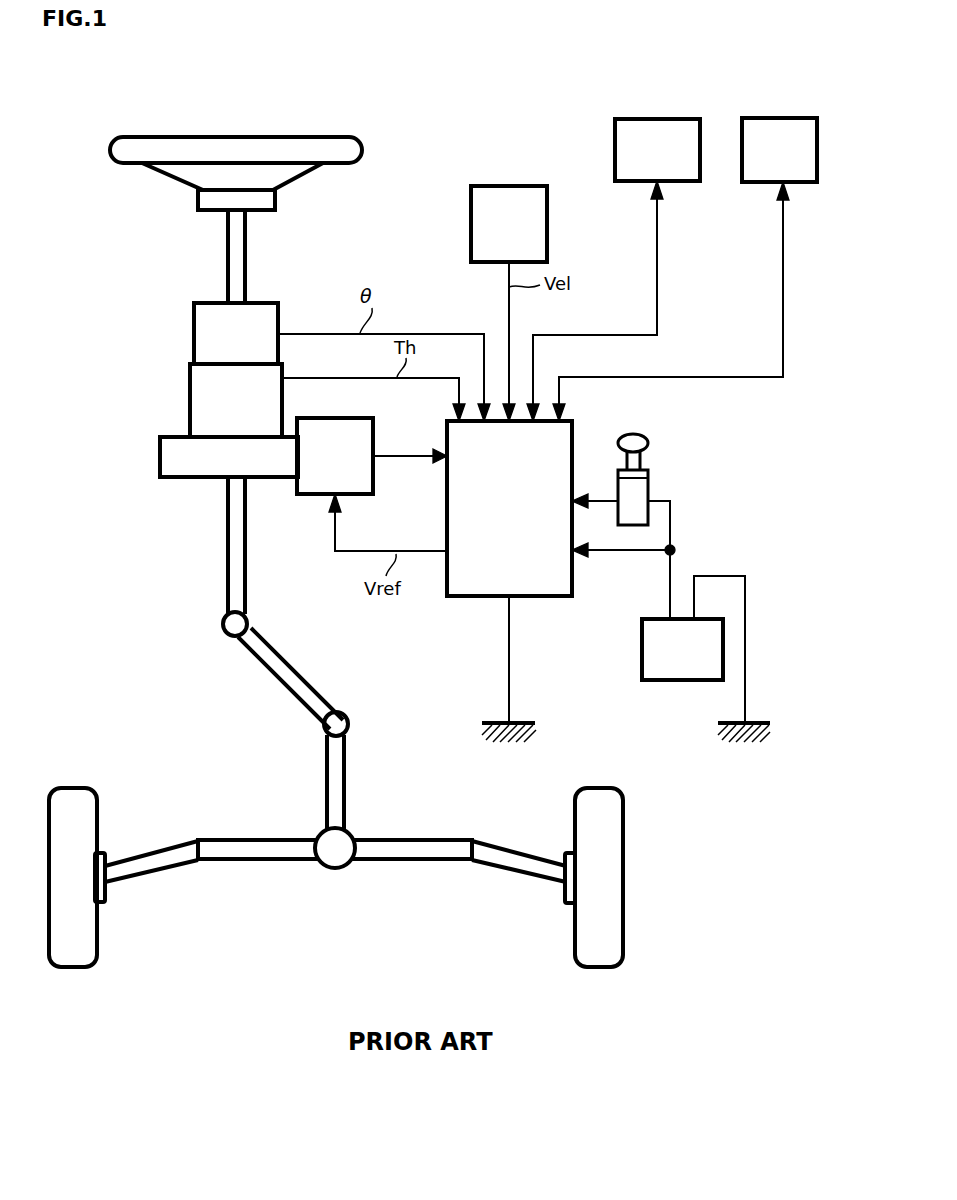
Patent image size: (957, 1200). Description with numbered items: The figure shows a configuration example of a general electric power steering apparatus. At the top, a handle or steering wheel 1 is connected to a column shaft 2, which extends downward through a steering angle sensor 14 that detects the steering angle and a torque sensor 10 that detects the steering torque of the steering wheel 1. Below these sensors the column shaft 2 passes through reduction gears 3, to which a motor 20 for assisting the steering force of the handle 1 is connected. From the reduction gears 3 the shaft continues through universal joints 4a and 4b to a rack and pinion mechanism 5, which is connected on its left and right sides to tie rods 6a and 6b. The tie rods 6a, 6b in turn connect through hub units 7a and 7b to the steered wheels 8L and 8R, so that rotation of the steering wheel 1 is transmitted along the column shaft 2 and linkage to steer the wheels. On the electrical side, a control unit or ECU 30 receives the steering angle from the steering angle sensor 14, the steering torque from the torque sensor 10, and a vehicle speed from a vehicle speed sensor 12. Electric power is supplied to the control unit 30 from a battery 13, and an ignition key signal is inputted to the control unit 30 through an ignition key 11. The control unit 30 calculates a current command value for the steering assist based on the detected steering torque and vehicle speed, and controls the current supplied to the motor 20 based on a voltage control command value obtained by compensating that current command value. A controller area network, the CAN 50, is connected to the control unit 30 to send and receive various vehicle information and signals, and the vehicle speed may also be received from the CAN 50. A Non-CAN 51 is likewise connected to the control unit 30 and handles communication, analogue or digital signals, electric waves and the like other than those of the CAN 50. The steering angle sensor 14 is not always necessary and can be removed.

The handle (steering wheel) 1 is at (368, 145).
The column shaft 2 is at (226, 251).
The reduction gears 3 is at (158, 462).
The universal joint 4a is at (222, 632).
The universal joint 4b is at (322, 731).
The rack and pinion mechanism 5 is at (346, 828).
The tie rod 6a is at (138, 857).
The tie rod 6b is at (500, 852).
The hub unit 7a is at (105, 900).
The hub unit 7b is at (565, 900).
The steered wheel 8L is at (97, 955).
The steered wheel 8R is at (575, 955).
The torque sensor 10 is at (188, 392).
The ignition key 11 is at (648, 443).
The vehicle speed sensor 12 is at (547, 197).
The battery 13 is at (641, 642).
The steering angle sensor 14 is at (192, 325).
The motor 20 is at (373, 427).
The control unit (ECU) 30 is at (572, 423).
The controller area network (CAN) 50 is at (796, 117).
The Non-CAN 51 is at (674, 118).